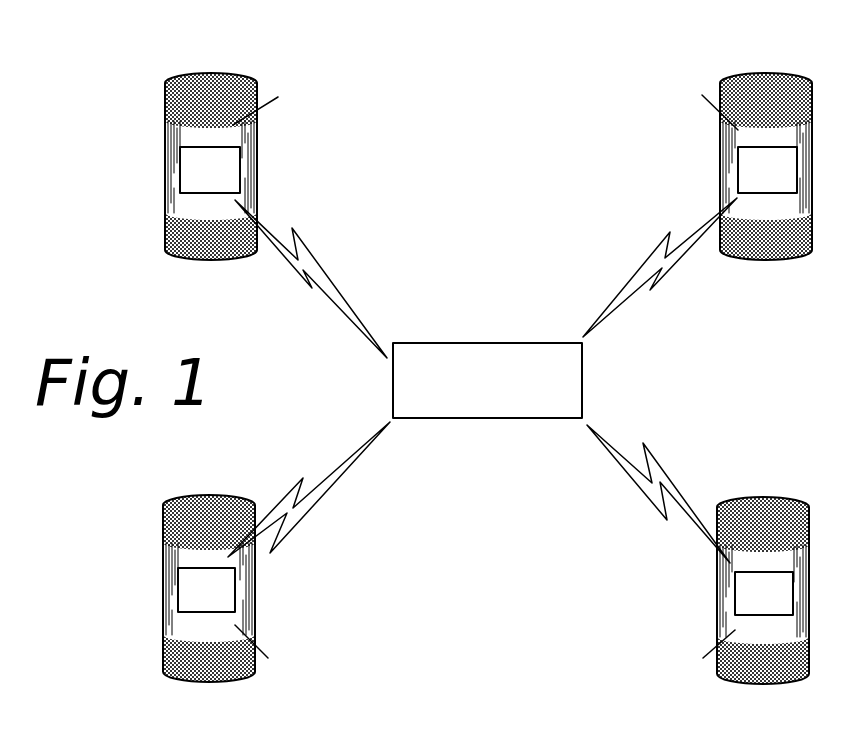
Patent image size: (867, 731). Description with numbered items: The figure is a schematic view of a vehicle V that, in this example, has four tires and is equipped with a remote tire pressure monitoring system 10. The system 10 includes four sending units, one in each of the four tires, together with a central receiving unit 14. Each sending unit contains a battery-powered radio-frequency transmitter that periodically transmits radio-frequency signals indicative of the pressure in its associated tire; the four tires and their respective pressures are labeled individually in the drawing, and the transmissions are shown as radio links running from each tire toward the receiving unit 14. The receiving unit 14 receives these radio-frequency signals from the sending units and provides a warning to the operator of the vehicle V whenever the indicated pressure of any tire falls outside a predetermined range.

The remote tire pressure monitoring system 10 is at (521, 228).
The receiving unit 14 is at (490, 343).
The vehicle V is at (490, 527).